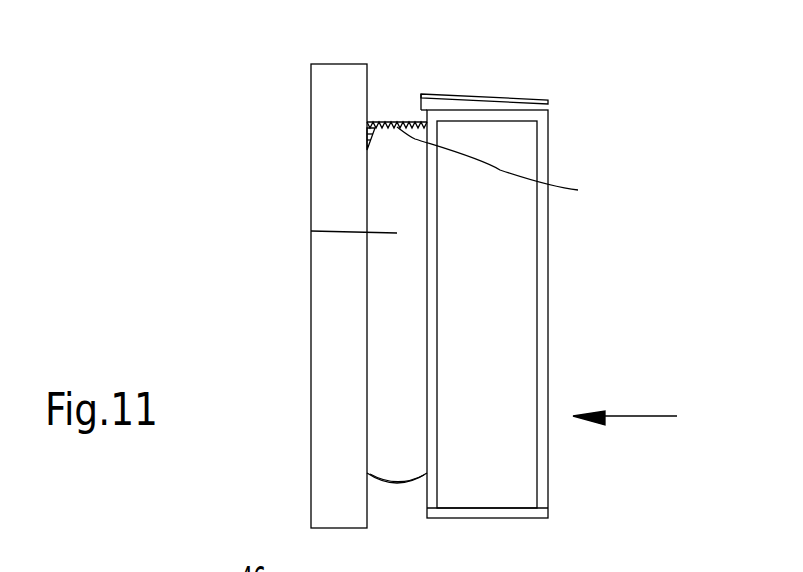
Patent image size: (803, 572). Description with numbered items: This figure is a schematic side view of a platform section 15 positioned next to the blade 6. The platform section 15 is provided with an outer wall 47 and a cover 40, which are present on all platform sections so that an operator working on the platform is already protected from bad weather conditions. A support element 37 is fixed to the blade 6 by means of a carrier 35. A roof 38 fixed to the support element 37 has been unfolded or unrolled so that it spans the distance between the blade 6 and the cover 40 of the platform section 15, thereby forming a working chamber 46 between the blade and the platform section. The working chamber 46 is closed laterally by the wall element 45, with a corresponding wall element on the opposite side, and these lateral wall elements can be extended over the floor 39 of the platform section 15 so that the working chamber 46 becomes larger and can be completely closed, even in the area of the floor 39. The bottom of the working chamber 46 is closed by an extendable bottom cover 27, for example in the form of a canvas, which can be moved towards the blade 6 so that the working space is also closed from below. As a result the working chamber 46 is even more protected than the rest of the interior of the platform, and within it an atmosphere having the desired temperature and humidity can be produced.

The blade 6 is at (345, 300).
The platform section 15 is at (639, 409).
The bottom cover 27 is at (397, 485).
The carrier 35 is at (372, 136).
The support element 37 is at (396, 120).
The roof 38 is at (506, 169).
The floor 39 is at (483, 513).
The cover 40 is at (500, 98).
The wall element 45 is at (311, 231).
The working chamber 46 is at (411, 341).
The outer wall 47 is at (542, 318).